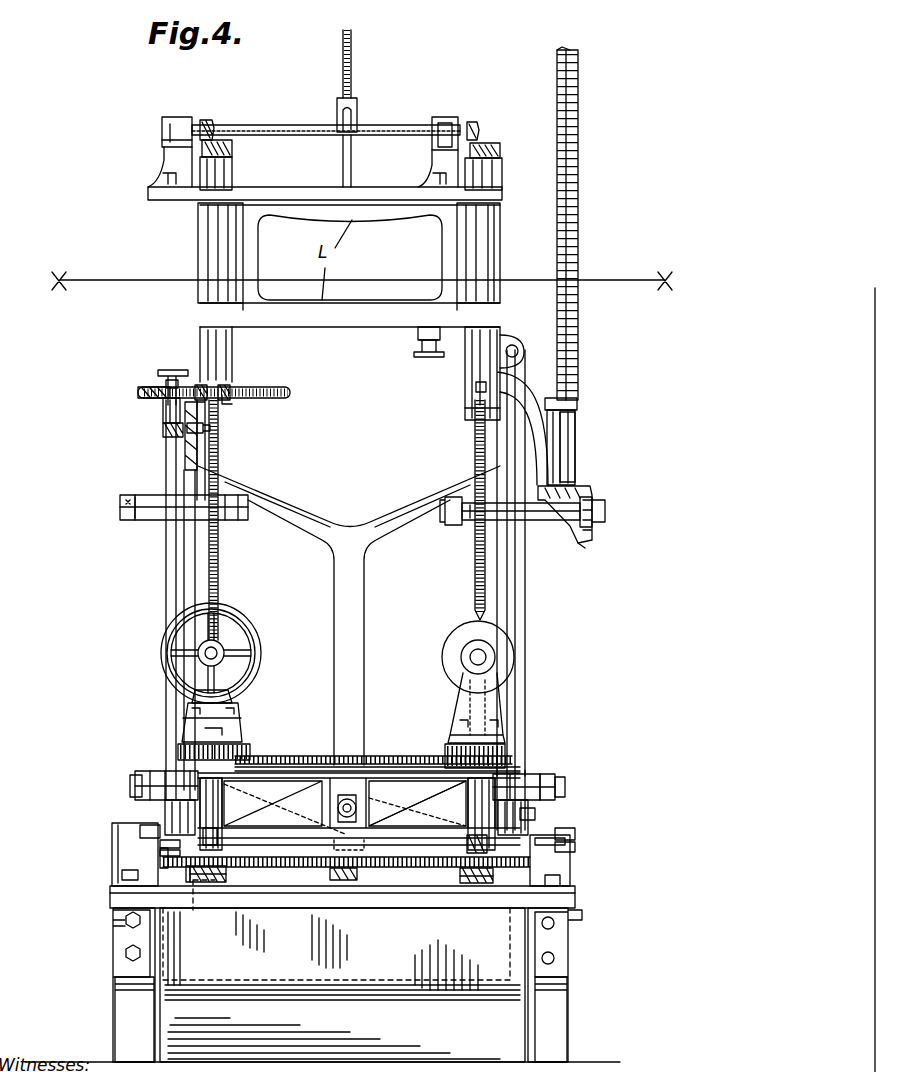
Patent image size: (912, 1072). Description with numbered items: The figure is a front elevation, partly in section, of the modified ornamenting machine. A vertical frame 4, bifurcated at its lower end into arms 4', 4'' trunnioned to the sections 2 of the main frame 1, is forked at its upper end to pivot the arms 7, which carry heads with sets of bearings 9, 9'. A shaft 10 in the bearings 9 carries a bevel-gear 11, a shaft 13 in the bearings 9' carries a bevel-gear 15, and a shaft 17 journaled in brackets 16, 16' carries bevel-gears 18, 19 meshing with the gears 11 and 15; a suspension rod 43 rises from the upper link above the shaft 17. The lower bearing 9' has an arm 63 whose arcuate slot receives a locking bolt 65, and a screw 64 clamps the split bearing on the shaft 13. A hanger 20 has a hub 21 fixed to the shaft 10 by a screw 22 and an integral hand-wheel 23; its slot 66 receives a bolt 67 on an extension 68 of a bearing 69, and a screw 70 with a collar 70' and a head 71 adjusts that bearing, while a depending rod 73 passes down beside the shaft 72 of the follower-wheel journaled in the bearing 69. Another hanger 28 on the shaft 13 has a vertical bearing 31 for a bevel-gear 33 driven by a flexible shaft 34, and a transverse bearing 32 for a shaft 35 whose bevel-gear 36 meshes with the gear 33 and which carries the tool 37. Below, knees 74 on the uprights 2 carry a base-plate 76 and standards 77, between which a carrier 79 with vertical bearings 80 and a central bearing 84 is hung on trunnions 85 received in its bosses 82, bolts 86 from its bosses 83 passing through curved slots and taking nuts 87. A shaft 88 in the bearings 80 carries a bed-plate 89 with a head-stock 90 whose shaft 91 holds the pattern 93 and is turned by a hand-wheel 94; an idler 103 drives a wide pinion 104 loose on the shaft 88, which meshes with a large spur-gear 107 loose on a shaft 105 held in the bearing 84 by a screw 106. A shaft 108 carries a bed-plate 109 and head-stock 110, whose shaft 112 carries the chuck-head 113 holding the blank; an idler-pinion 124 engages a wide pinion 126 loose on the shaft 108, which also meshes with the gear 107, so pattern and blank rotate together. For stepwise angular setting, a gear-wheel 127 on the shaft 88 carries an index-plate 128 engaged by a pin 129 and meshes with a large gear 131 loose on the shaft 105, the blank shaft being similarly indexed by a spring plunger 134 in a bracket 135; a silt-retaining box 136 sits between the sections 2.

The frame 1 is at (570, 1044).
The frame section 2 is at (341, 1019).
The vertical frame 4 is at (349, 615).
The bifurcated lower end 4' is at (417, 803).
The frame panel 4'' is at (284, 807).
The arm 7 is at (158, 805).
The bearing 9 is at (236, 269).
The bearing 9' is at (486, 289).
The shaft 10 is at (210, 252).
The bevel-gear 11 is at (225, 148).
The shaft 13 is at (478, 245).
The bevel-gear 15 is at (498, 145).
The bracket 16 is at (170, 137).
The bracket 16' is at (438, 137).
The shaft 17 is at (290, 126).
The bevel-gear 18 is at (210, 122).
The bevel-gear 19 is at (477, 124).
The hanger 20 is at (178, 468).
The hub 21 is at (220, 385).
The screw 22 is at (238, 387).
The hand-wheel 23 is at (292, 393).
The hanger 28 is at (548, 432).
The vertical bearing 31 is at (576, 456).
The transverse bearing 32 is at (550, 522).
The bevel-gear 33 is at (580, 486).
The flexible shaft 34 is at (579, 128).
The shaft 35 is at (607, 512).
The bevel-gear 36 is at (583, 538).
The tool 37 is at (474, 446).
The cable rod 43 is at (343, 168).
The arm 63 is at (416, 340).
The screw 64 is at (520, 351).
The bolt 65 is at (420, 355).
The slot 66 is at (186, 441).
The bolt 67 is at (205, 430).
The extension 68 is at (200, 470).
The bearing 69 is at (150, 521).
The screw 70 is at (143, 421).
The collar 70' is at (131, 407).
The head 71 is at (168, 372).
The shaft 72 is at (124, 507).
The threaded rod 73 is at (219, 566).
The knee 74 is at (118, 958).
The base-plate 76 is at (375, 909).
The standard 77 is at (150, 850).
The carrier 79 is at (412, 814).
The vertical bearing 80 is at (346, 814).
The tubular boss 82 is at (175, 790).
The tubular boss 83 is at (140, 831).
The central bearing 84 is at (336, 806).
The trunnion 85 is at (132, 788).
The bolt 86 is at (165, 843).
The nut 87 is at (160, 852).
The shaft 88 is at (200, 884).
The bed-plate 89 is at (232, 735).
The head-stock 90 is at (240, 700).
The shaft 91 is at (204, 660).
The form or pattern 93 is at (226, 648).
The hand-wheel 94 is at (198, 652).
The idler 103 is at (252, 757).
The wide pinion 104 is at (246, 748).
The shaft 105 is at (352, 757).
The screw 106 is at (360, 845).
The spur-gear 107 is at (390, 766).
The shaft 108 is at (480, 885).
The bed-plate 109 is at (492, 743).
The head-stock 110 is at (487, 660).
The shaft 112 is at (490, 654).
The chuck-head 113 is at (500, 668).
The idler-pinion 124 is at (448, 745).
The wide pinion 126 is at (518, 775).
The gear-wheel 127 is at (210, 880).
The index-plate 128 is at (243, 872).
The pin 129 is at (192, 850).
The gear 131 is at (346, 871).
The plunger 134 is at (465, 858).
The bracket 135 is at (470, 885).
The silt-retaining box 136 is at (342, 971).